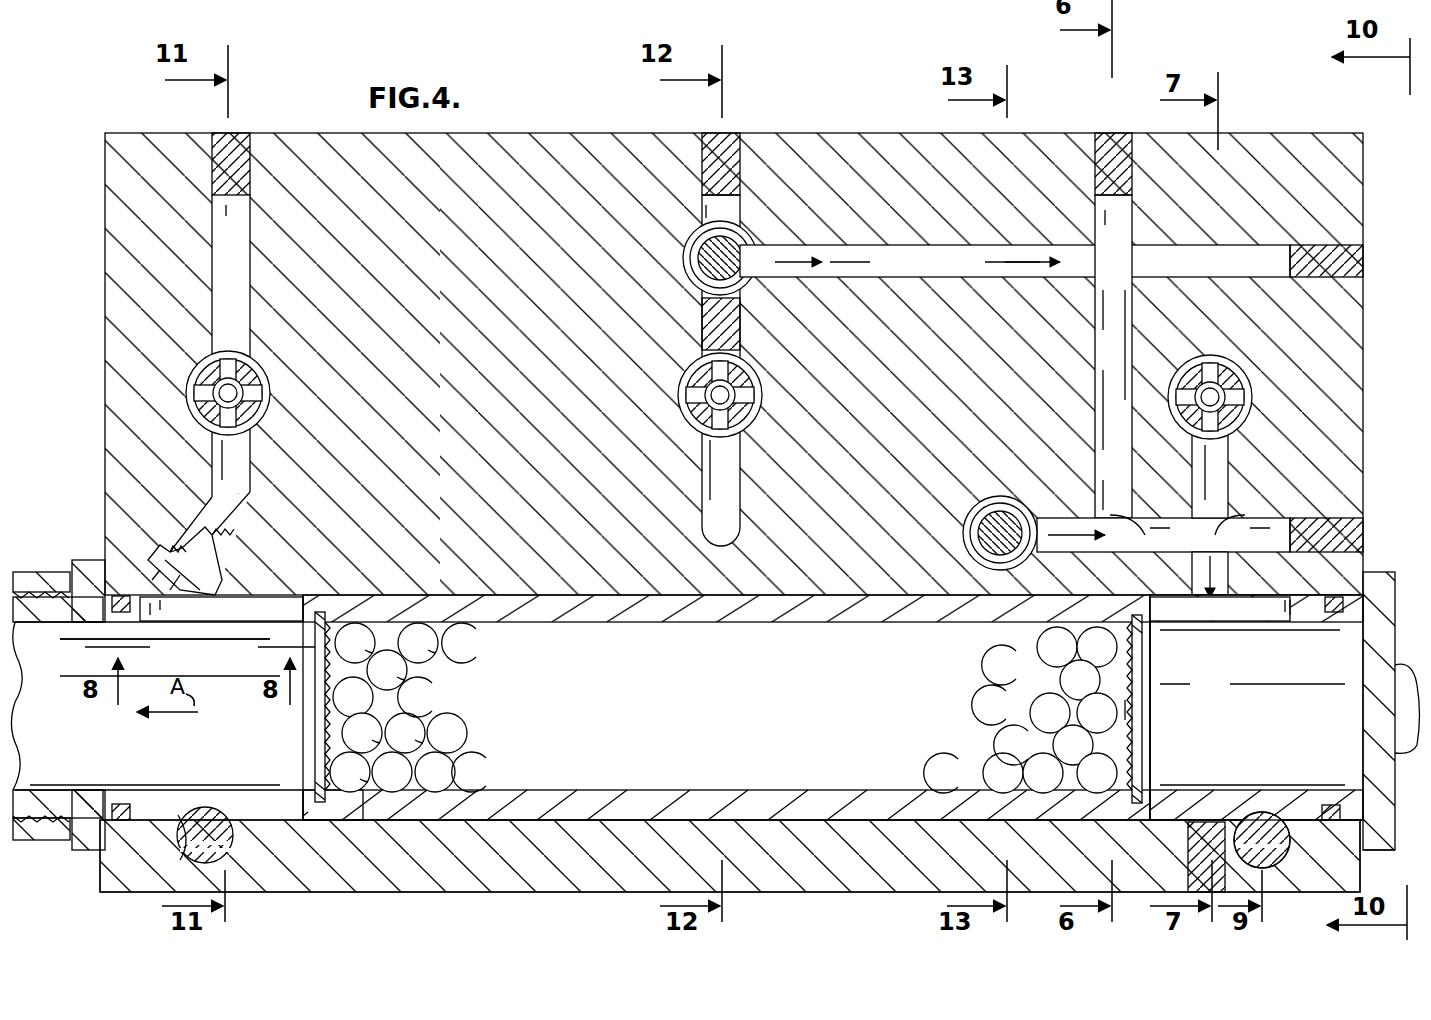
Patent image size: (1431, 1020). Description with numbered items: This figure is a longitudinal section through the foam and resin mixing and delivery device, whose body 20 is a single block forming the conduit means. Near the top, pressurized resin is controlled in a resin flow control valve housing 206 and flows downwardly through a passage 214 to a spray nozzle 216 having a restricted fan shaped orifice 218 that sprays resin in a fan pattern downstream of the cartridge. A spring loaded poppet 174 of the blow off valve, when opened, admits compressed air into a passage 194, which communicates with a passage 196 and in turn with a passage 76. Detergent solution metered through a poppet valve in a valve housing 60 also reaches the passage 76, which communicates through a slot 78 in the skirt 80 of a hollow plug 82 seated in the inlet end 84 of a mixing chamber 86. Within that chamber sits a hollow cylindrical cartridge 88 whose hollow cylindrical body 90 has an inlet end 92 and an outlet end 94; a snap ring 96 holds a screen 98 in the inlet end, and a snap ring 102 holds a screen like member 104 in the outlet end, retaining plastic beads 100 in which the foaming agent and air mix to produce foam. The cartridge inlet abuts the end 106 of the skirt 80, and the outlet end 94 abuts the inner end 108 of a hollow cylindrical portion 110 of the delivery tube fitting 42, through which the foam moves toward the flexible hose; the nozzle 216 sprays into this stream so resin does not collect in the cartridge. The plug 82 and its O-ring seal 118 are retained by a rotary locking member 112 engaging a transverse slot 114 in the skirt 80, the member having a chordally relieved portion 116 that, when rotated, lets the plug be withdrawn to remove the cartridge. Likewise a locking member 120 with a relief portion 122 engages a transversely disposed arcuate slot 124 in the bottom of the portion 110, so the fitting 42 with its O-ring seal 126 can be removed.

The body 20 is at (94, 324).
The resin flow control valve housing 206 is at (190, 393).
The passage 214 is at (220, 460).
The spray nozzle 216 is at (222, 500).
The restricted fan shaped orifice 218 is at (175, 560).
The poppet 174 is at (742, 232).
The passage 194 is at (1051, 281).
The passage 196 is at (1115, 340).
The valve housing 60 is at (1245, 415).
The passage 76 is at (1212, 482).
The inlet end 84 is at (1290, 555).
The O-ring seal 118 is at (1340, 595).
The hollow plug 82 is at (1362, 645).
The snap ring 102 is at (291, 614).
The screen like member 104 is at (292, 660).
The delivery tube fitting 42 is at (52, 631).
The outlet end 94 is at (303, 745).
The locking member 120 is at (175, 845).
The transversely disposed arcuate slot 124 is at (210, 822).
The O-ring seal 126 is at (85, 845).
The relief portion 122 is at (195, 852).
The hollow cylindrical portion 110 is at (706, 871).
The inner end 108 is at (343, 800).
The plastic beads 100 is at (460, 790).
The hollow cylindrical cartridge 88 is at (810, 612).
The mixing chamber 86 is at (726, 707).
The hollow cylindrical body 90 is at (726, 721).
The snap ring 96 is at (1162, 626).
The slot 78 is at (1258, 616).
The screen 98 is at (1127, 714).
The inlet end 92 is at (1142, 743).
The end 106 is at (1160, 812).
The skirt 80 is at (1270, 820).
The transverse slot 114 is at (1267, 822).
The rotary locking member 112 is at (1318, 815).
The chordally relieved portion 116 is at (1330, 851).